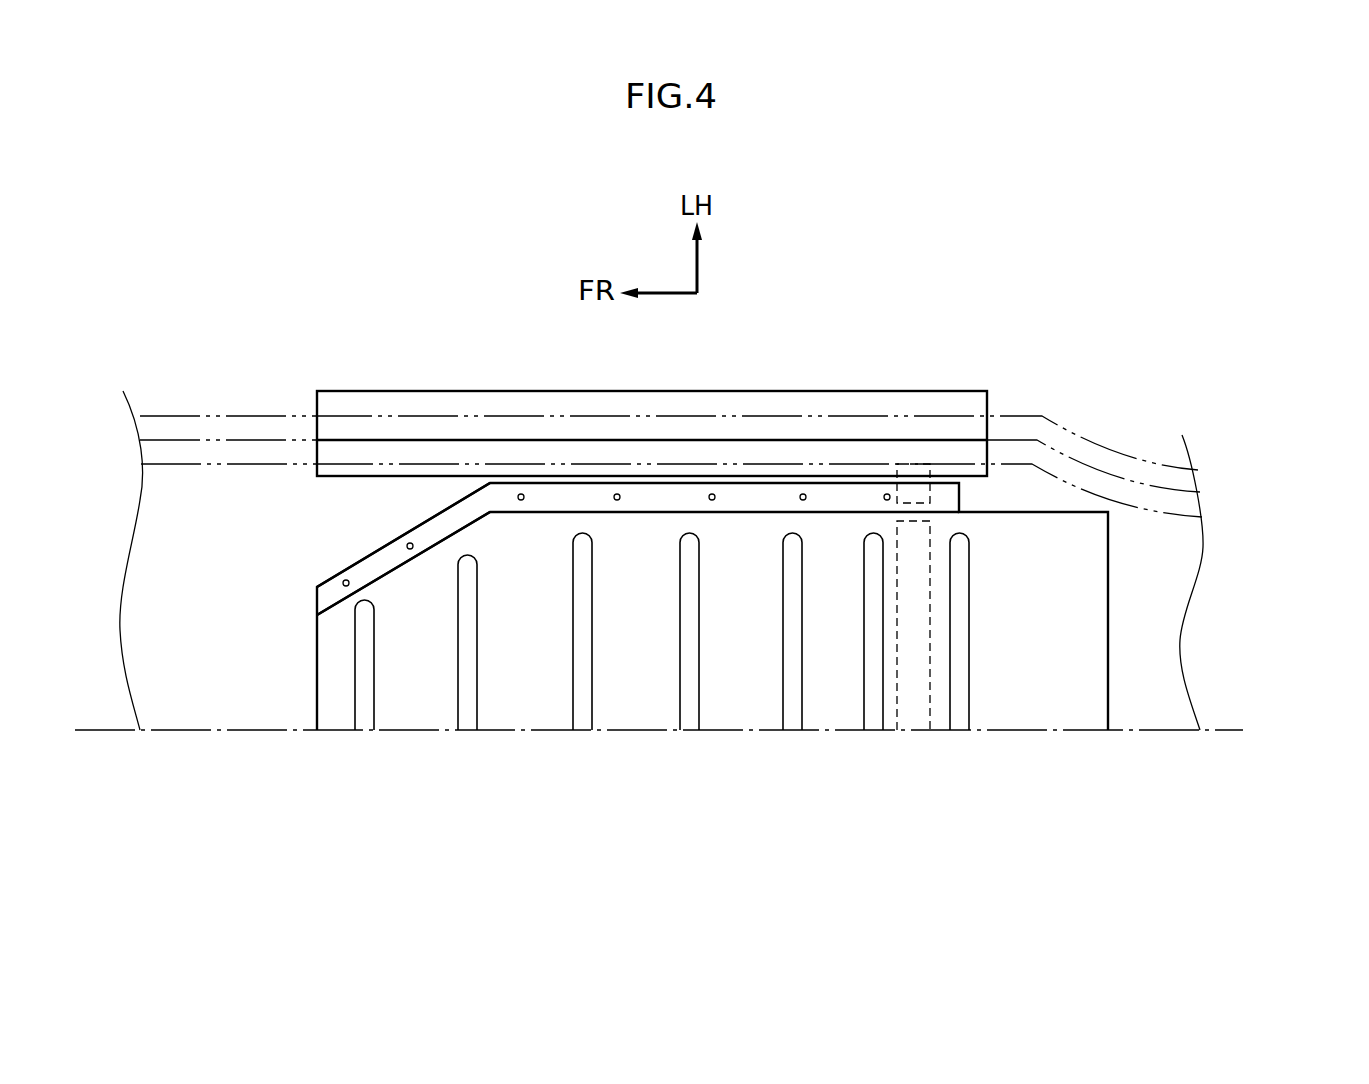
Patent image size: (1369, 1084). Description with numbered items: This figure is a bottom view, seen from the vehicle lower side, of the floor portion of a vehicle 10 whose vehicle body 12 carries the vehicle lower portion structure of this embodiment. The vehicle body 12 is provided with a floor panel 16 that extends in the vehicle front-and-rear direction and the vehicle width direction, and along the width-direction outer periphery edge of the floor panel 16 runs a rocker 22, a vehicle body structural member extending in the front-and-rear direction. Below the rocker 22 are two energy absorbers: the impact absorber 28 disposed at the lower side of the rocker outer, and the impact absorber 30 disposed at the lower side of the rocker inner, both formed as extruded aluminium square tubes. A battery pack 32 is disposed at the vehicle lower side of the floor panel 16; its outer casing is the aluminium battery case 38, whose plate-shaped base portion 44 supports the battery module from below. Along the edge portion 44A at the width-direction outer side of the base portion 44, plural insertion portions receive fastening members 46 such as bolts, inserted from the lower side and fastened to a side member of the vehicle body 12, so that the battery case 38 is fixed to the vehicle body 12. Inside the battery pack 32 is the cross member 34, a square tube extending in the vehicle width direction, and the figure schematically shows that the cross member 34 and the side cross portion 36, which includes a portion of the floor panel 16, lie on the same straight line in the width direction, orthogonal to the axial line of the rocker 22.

The vehicle 10 is at (661, 440).
The vehicle body 12 is at (1071, 273).
The floor panel 16 is at (217, 715).
The rocker 22 is at (187, 415).
The impact absorber 28 is at (447, 400).
The impact absorber 30 is at (325, 448).
The battery pack 32 is at (1013, 792).
The cross member 34 is at (898, 690).
The side cross portion 36 is at (897, 465).
The battery case 38 is at (826, 606).
The base portion 44 is at (1115, 581).
The edge portion 44A is at (323, 597).
The fastening members 46 is at (345, 578).